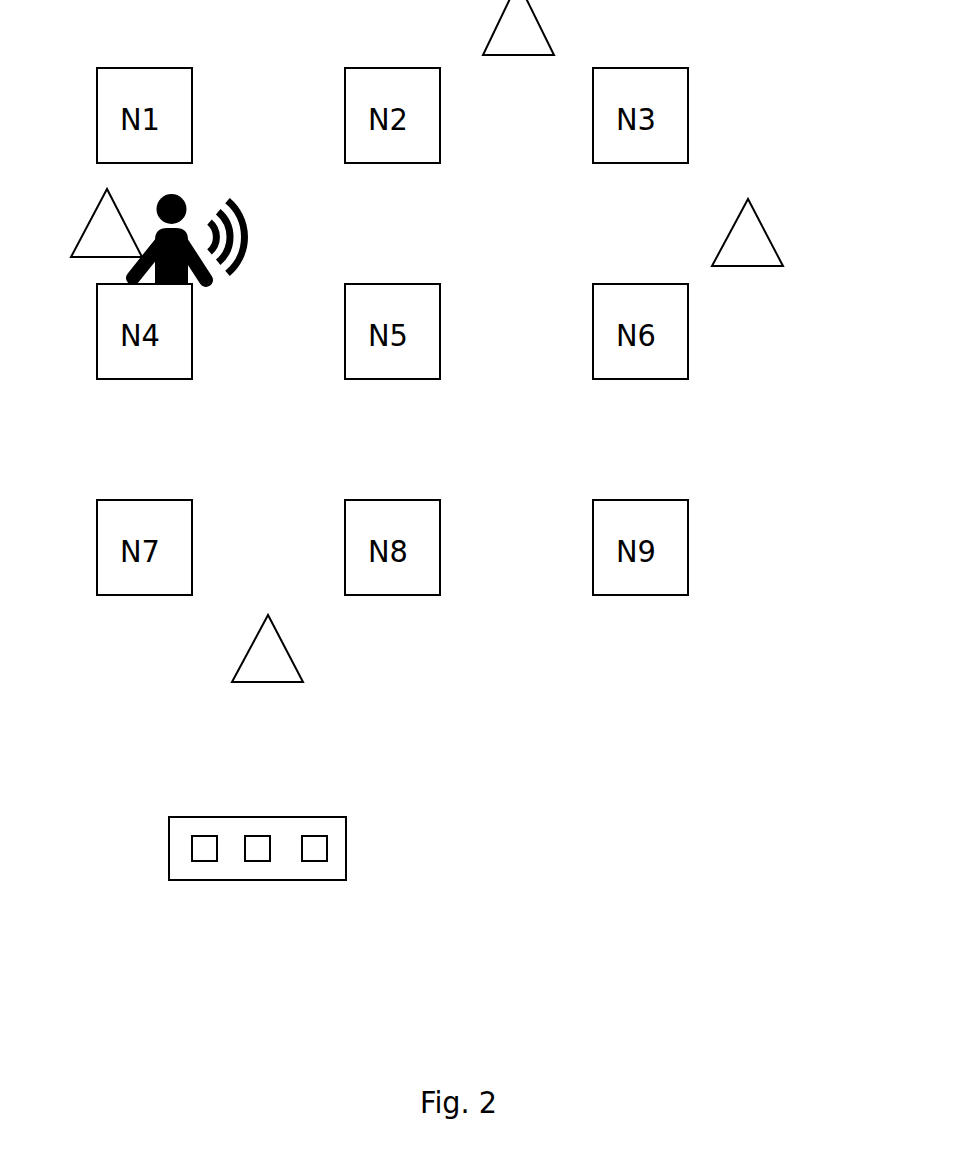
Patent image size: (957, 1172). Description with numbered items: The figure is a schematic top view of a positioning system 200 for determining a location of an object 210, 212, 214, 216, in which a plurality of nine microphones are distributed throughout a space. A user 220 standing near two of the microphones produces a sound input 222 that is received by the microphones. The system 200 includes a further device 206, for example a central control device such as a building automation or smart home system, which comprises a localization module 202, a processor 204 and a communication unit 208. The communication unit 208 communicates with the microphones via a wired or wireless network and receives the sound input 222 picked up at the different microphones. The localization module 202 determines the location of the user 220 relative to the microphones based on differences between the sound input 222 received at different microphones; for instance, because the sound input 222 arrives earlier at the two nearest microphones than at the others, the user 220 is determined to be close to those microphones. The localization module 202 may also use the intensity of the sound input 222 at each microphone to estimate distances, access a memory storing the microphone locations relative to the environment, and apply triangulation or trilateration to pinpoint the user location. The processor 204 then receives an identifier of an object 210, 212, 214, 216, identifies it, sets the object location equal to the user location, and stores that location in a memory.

The positioning system 200 is at (482, 1037).
The localization module 202 is at (195, 848).
The processor 204 is at (255, 848).
The further device 206 is at (191, 893).
The communication unit 208 is at (312, 848).
The object 210 is at (243, 652).
The object 212 is at (101, 242).
The object 214 is at (518, 32).
The object 216 is at (752, 247).
The user 220 is at (187, 200).
The sound input 222 is at (246, 217).